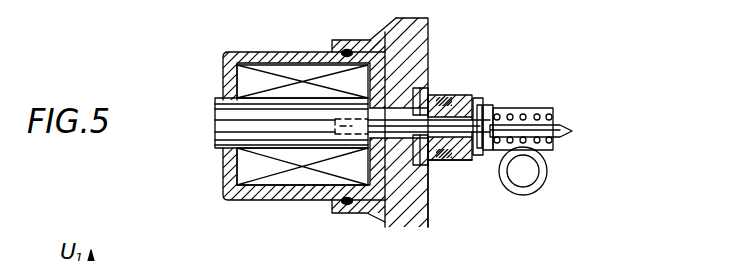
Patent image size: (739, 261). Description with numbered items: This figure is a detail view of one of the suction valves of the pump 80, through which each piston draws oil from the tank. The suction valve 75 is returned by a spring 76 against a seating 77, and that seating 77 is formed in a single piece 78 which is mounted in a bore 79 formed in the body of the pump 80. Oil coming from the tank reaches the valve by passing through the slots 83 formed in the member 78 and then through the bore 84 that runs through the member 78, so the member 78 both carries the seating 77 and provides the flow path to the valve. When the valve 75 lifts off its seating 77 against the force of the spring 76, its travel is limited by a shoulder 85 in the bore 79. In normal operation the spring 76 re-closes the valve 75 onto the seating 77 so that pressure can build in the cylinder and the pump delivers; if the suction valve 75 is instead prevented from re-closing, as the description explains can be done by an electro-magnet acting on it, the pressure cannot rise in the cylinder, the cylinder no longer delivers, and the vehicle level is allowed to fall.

The suction valve 75 is at (505, 108).
The spring 76 is at (545, 112).
The seating 77 is at (477, 98).
The piece 78 is at (460, 158).
The bore 79 is at (429, 87).
The pump 80 is at (513, 212).
The slots 83 is at (426, 165).
The bore 84 is at (457, 95).
The shoulder 85 is at (498, 105).